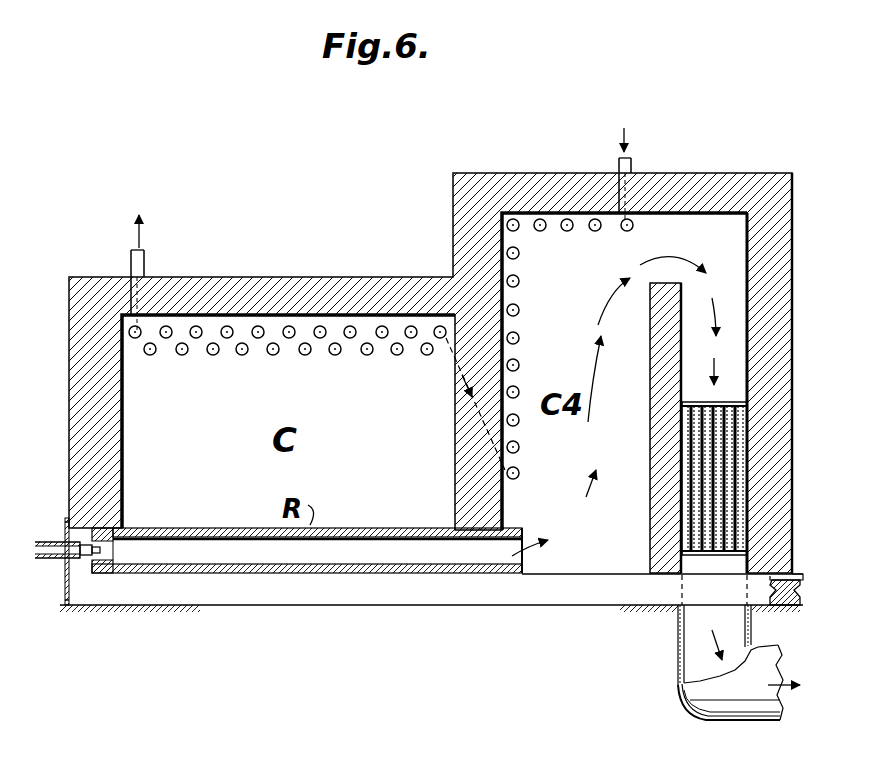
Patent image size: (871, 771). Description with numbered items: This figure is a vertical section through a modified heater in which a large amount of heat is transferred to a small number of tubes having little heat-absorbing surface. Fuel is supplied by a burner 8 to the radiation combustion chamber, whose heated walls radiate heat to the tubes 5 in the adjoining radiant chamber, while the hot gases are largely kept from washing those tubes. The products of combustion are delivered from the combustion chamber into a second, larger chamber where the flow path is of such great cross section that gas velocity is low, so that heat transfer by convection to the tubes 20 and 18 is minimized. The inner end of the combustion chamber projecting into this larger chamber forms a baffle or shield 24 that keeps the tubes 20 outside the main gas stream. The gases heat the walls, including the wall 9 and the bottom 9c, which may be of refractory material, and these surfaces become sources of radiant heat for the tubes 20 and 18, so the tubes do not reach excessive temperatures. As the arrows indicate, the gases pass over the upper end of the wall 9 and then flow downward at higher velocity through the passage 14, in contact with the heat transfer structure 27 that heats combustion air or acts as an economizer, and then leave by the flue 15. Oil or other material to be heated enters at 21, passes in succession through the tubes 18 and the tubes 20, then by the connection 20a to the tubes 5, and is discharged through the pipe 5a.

The tubes 5 is at (182, 355).
The pipe 5a is at (144, 252).
The burner 8 is at (84, 560).
The wall 9 is at (650, 368).
The bottom 9c is at (600, 575).
The passage 14 is at (692, 384).
The flue 15 is at (680, 672).
The tubes 18 is at (587, 246).
The tubes 20 is at (520, 336).
The connection 20a is at (480, 440).
The inlet 21 is at (631, 158).
The baffle or shield 24 is at (534, 528).
The heat transfer structure 27 is at (652, 560).